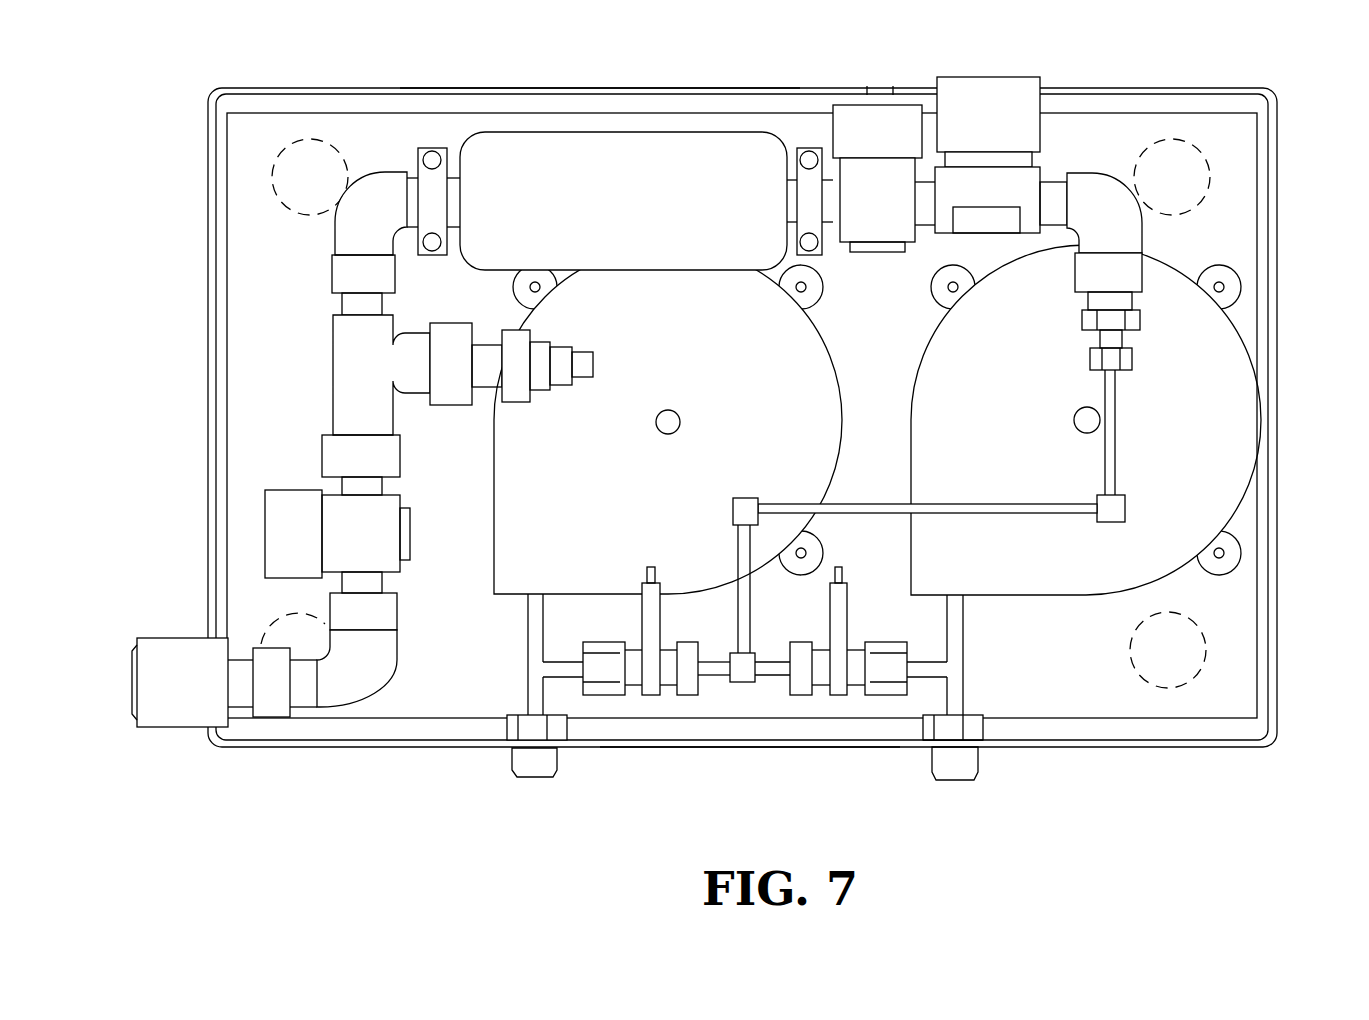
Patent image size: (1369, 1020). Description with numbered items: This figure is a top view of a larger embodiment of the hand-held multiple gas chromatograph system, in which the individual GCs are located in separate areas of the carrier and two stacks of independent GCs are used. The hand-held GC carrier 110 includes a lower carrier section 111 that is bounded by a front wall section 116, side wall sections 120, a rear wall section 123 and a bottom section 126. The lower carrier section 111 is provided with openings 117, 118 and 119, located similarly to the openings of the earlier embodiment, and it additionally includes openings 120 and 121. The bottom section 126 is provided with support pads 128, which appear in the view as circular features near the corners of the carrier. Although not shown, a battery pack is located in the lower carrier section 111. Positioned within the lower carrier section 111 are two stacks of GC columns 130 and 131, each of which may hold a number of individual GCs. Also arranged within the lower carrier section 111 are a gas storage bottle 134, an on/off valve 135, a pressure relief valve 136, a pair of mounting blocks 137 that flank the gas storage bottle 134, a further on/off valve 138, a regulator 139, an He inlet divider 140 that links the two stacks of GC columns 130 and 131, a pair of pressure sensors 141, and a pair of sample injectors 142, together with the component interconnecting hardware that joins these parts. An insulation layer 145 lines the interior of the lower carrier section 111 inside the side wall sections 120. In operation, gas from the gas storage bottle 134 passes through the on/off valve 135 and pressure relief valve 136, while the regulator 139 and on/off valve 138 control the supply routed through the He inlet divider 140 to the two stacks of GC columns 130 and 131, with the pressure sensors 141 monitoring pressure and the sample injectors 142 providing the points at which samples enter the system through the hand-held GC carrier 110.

The hand-held GC carrier 110 is at (760, 64).
The lower carrier section 111 is at (1130, 763).
The front wall section 116 is at (595, 88).
The opening 117 is at (1042, 85).
The opening 118 is at (880, 87).
The opening 119 is at (205, 632).
The side wall section 120 is at (208, 420).
The opening 121 is at (925, 750).
The rear wall section 123 is at (720, 745).
The bottom section 126 is at (855, 345).
The support pads 128 is at (312, 215).
The stack of GC columns 130 is at (770, 426).
The stack of GC columns 131 is at (1025, 426).
The gas storage bottle 134 is at (615, 203).
The on/off valve 135 is at (385, 545).
The pressure relief valve 136 is at (593, 362).
The mounting blocks 137 is at (433, 150).
The on/off valve 138 is at (905, 216).
The regulator 139 is at (966, 136).
The He inlet divider 140 is at (745, 685).
The pressure sensors 141 is at (650, 568).
The sample injectors 142 is at (560, 765).
The insulation layer 145 is at (1125, 105).